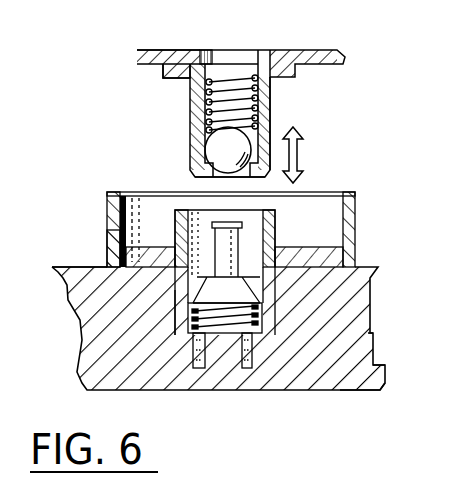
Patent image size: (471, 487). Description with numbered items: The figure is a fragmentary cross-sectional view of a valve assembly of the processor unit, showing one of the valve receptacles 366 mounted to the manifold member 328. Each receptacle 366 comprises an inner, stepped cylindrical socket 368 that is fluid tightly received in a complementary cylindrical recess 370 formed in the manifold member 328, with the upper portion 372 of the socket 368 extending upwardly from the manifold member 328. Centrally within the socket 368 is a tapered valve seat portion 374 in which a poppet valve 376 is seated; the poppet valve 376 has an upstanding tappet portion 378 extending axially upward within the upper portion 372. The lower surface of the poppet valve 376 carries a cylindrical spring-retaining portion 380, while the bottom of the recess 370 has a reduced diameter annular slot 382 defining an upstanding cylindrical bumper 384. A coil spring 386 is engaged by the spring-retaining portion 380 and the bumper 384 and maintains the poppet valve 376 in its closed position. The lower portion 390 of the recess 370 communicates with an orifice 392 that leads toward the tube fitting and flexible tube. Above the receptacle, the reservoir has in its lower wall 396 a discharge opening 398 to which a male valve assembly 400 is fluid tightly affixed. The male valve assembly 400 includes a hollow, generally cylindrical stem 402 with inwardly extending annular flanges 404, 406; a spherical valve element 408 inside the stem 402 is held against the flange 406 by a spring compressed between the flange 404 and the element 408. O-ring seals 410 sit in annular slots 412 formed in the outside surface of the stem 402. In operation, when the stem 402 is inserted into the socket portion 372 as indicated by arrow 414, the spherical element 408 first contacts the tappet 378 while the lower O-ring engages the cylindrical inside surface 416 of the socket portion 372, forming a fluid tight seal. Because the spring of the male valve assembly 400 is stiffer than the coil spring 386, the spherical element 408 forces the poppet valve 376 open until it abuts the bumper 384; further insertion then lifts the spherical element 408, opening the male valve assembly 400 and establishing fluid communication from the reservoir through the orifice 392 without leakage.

The manifold member 328 is at (148, 380).
The valve receptacle 366 is at (300, 328).
The stepped cylindrical socket 368 is at (112, 236).
The cylindrical recess 370 is at (74, 292).
The upper portion of the socket 372 is at (273, 248).
The tapered valve seat portion 374 is at (270, 290).
The poppet valve 376 is at (124, 220).
The tappet portion 378 is at (332, 268).
The spring-retaining portion 380 is at (300, 365).
The annular slot 382 is at (330, 390).
The cylindrical bumper 384 is at (224, 345).
The coil spring 386 is at (357, 222).
The lower portion of the hole 390 is at (300, 350).
The orifice 392 is at (188, 290).
The lower wall of the reservoir 396 is at (320, 58).
The discharge opening 398 is at (257, 54).
The male valve assembly 400 is at (268, 125).
The cylindrical stem 402 is at (193, 120).
The annular flange 404 is at (160, 50).
The annular flange 406 is at (270, 180).
The spherical valve element 408 is at (156, 79).
The O-ring seal 410 is at (272, 148).
The annular slot 412 is at (192, 135).
The arrow 414 is at (300, 154).
The cylindrical inside surface 416 is at (268, 232).